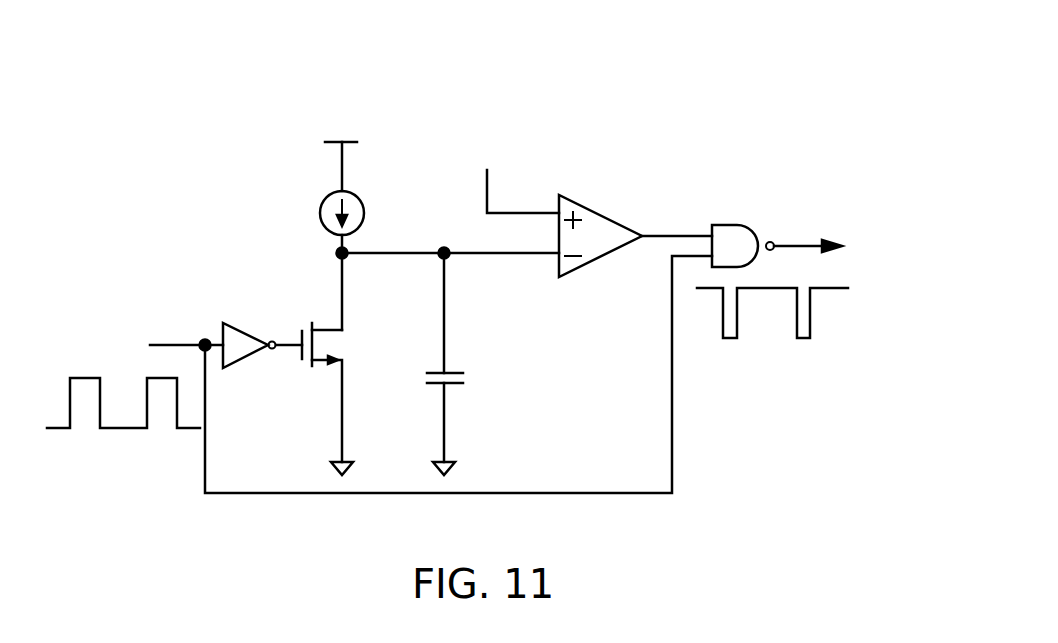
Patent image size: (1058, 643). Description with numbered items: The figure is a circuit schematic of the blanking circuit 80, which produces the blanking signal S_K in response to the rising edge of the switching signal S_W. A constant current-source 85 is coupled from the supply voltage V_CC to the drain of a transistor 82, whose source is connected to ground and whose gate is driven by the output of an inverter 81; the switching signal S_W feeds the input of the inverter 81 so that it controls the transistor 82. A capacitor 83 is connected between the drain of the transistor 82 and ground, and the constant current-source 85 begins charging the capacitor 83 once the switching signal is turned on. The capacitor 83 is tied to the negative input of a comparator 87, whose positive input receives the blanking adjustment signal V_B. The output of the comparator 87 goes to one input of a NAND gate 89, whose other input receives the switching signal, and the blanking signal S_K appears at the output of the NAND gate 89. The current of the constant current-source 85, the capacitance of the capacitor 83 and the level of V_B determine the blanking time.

The blanking circuit 80 is at (900, 55).
The inverter 81 is at (238, 324).
The transistor 82 is at (322, 343).
The capacitor 83 is at (447, 373).
The constant current-source 85 is at (322, 205).
The comparator 87 is at (602, 213).
The NAND gate 89 is at (742, 225).